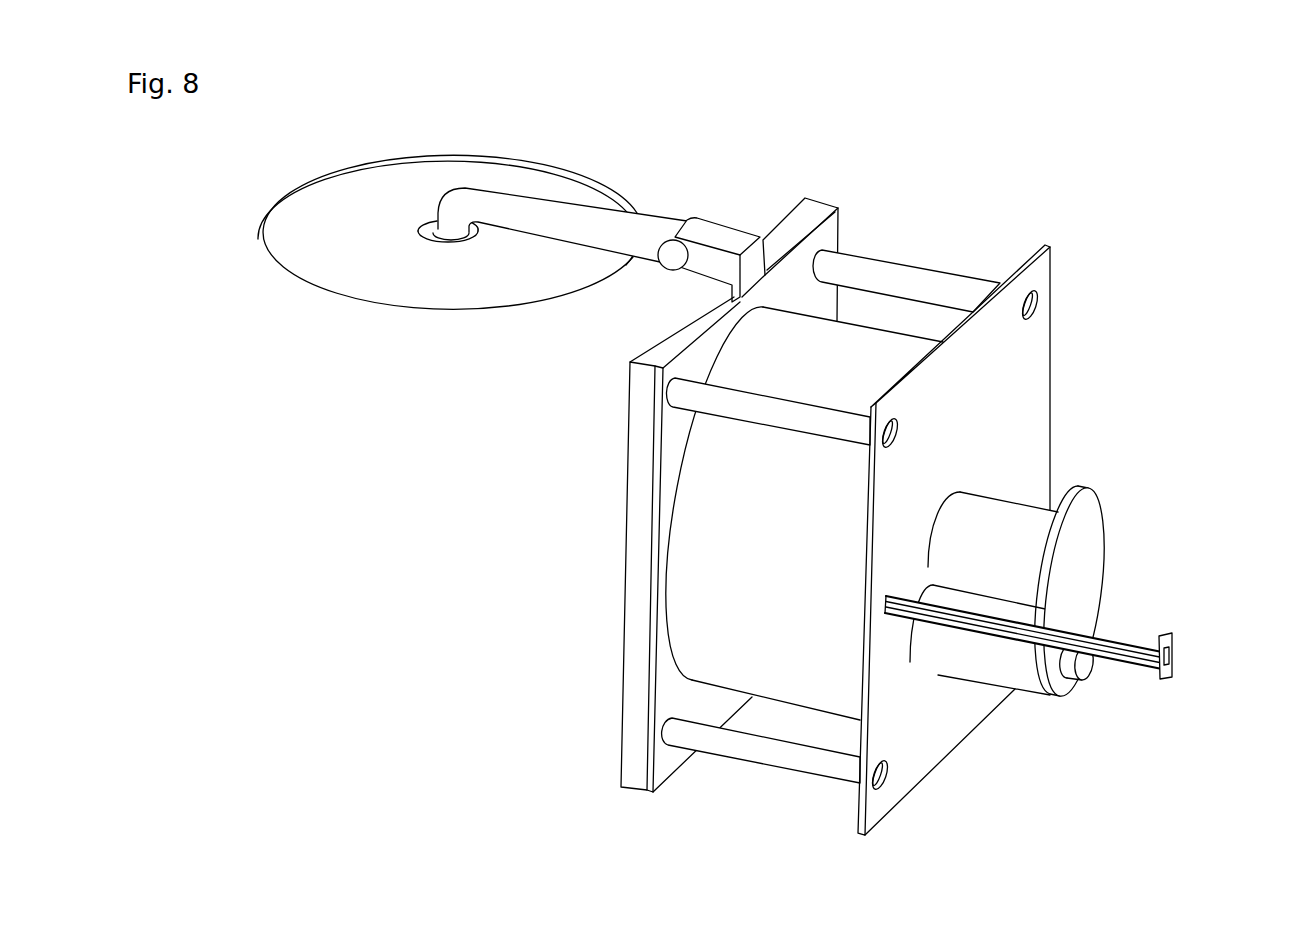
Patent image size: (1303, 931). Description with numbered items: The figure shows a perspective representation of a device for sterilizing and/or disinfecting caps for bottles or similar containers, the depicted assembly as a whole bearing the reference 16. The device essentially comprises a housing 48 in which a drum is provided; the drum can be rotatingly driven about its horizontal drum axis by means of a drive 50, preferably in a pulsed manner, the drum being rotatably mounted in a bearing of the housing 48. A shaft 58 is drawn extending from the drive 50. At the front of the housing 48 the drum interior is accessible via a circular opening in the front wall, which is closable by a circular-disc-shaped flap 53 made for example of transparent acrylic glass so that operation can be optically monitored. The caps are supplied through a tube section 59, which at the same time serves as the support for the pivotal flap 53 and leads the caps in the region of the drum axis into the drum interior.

The drive assembly 16 is at (997, 211).
The housing 48 is at (801, 220).
The drive 50 is at (1015, 527).
The flap 53 is at (350, 245).
The drive shaft 58 is at (1140, 631).
The tube section 59 is at (607, 222).